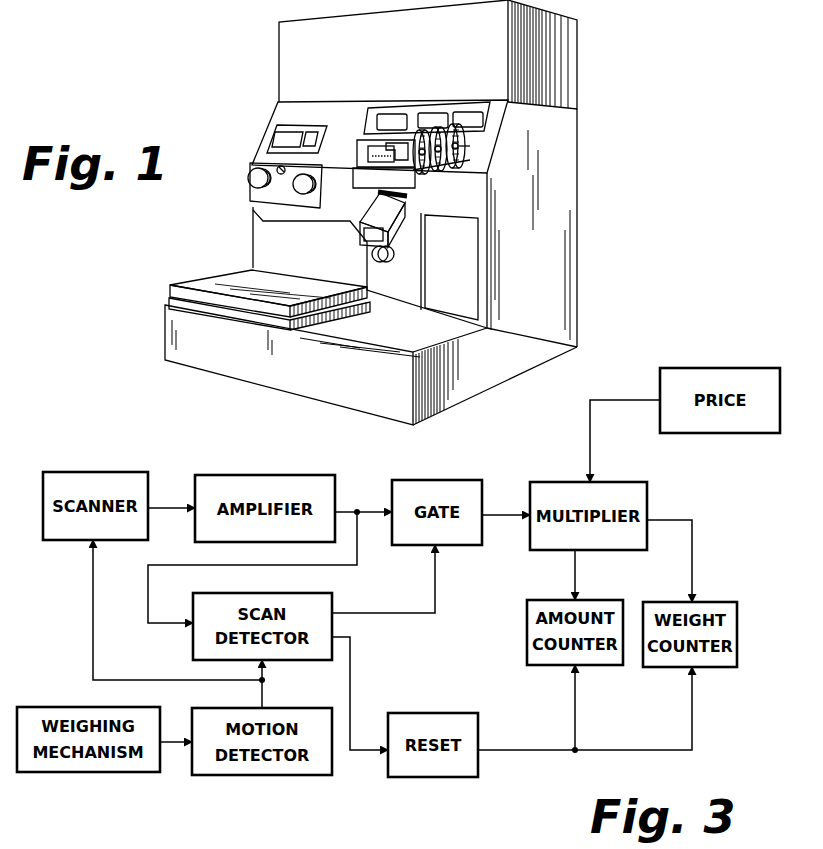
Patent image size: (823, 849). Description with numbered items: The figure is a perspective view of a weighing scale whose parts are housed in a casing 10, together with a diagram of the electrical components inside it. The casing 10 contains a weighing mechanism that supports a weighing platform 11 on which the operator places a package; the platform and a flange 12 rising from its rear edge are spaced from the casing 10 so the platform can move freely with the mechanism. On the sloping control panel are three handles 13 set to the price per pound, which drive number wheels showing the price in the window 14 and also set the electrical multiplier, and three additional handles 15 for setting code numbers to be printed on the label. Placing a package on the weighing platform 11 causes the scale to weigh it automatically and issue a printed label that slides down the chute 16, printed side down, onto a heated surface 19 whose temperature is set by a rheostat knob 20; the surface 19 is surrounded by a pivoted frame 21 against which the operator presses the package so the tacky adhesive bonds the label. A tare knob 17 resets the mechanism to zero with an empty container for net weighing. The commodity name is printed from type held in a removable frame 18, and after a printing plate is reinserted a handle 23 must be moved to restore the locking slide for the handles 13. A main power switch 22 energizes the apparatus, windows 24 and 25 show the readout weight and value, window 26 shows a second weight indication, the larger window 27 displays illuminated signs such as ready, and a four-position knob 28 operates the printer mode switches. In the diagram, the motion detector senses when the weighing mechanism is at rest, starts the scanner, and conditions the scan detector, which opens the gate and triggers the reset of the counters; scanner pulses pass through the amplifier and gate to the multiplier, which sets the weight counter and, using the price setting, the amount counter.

The casing 10 is at (568, 278).
The weighing platform 11 is at (181, 287).
The flange 12 is at (267, 258).
The handles 13 is at (466, 136).
The window 14 is at (470, 112).
The additional handles 15 is at (418, 168).
The chute 16 is at (400, 200).
The tare knob 17 is at (298, 193).
The removable frame 18 is at (362, 152).
The heated surface 19 is at (370, 222).
The knob 20 is at (390, 264).
The pivoted frame 21 is at (392, 228).
The main power switch 22 is at (281, 175).
The handle 23 is at (380, 141).
The window 24 is at (433, 113).
The window 25 is at (391, 114).
The window 26 is at (313, 131).
The window 27 is at (273, 147).
The four-position knob 28 is at (249, 177).